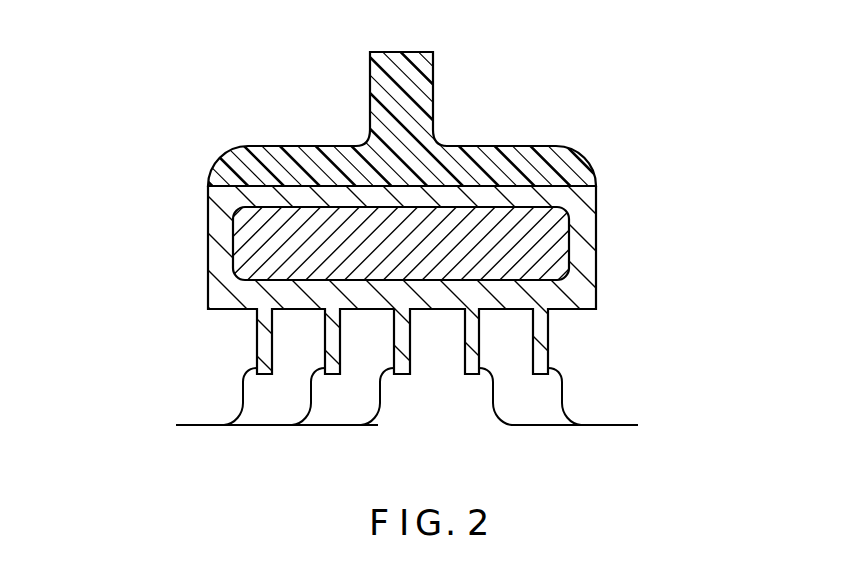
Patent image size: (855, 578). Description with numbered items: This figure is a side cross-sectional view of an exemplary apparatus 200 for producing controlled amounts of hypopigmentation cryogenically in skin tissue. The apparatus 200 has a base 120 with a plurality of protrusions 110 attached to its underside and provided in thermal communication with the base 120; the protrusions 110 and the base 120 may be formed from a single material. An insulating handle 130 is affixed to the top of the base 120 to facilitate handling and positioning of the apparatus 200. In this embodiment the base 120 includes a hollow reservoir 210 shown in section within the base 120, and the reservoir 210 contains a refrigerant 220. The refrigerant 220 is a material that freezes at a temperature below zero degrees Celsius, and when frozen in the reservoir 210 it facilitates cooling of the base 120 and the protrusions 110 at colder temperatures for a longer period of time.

The protrusions 110 is at (404, 403).
The base 120 is at (587, 230).
The insulating handle 130 is at (510, 145).
The apparatus 200 is at (427, 289).
The hollow reservoir 210 is at (233, 237).
The refrigerant 220 is at (255, 255).